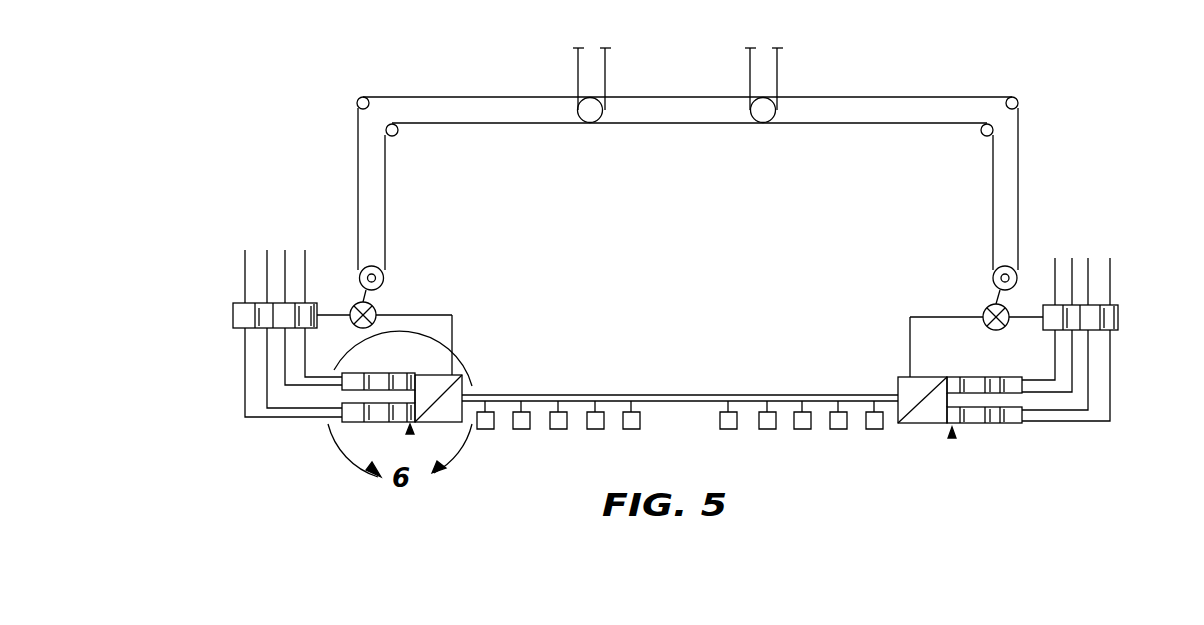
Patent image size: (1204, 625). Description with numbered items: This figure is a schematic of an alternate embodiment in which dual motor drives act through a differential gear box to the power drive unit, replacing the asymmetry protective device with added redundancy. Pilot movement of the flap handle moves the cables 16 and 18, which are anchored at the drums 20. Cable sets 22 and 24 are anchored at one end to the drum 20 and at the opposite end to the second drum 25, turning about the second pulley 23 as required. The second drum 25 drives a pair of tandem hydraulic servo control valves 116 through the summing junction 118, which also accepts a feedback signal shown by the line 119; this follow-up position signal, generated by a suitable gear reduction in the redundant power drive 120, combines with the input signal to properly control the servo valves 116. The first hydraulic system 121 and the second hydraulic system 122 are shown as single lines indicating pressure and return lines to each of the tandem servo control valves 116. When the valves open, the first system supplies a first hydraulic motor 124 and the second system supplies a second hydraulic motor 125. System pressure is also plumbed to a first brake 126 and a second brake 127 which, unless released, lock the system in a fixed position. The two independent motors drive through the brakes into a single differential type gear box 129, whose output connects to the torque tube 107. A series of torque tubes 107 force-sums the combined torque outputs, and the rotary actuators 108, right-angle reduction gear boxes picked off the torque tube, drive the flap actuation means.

The cable 16 is at (578, 62).
The cable 18 is at (777, 72).
The drum 20 is at (602, 118).
The cable set 22 is at (490, 124).
The second pulley 23 is at (357, 101).
The cable set 24 is at (888, 97).
The second drum 25 is at (384, 278).
The torque tube 107 is at (660, 402).
The rotary actuator 108 is at (521, 429).
The tandem hydraulic servo control valve 116 is at (233, 312).
The summing junction 118 is at (372, 305).
The feedback signal line 119 is at (453, 330).
The redundant power drive 120 is at (410, 434).
The first hydraulic system 121 is at (271, 246).
The second hydraulic system 122 is at (310, 246).
The first hydraulic motor 124 is at (1012, 423).
The second hydraulic motor 125 is at (353, 372).
The first brake 126 is at (400, 422).
The second brake 127 is at (390, 373).
The differential type gear box 129 is at (420, 423).